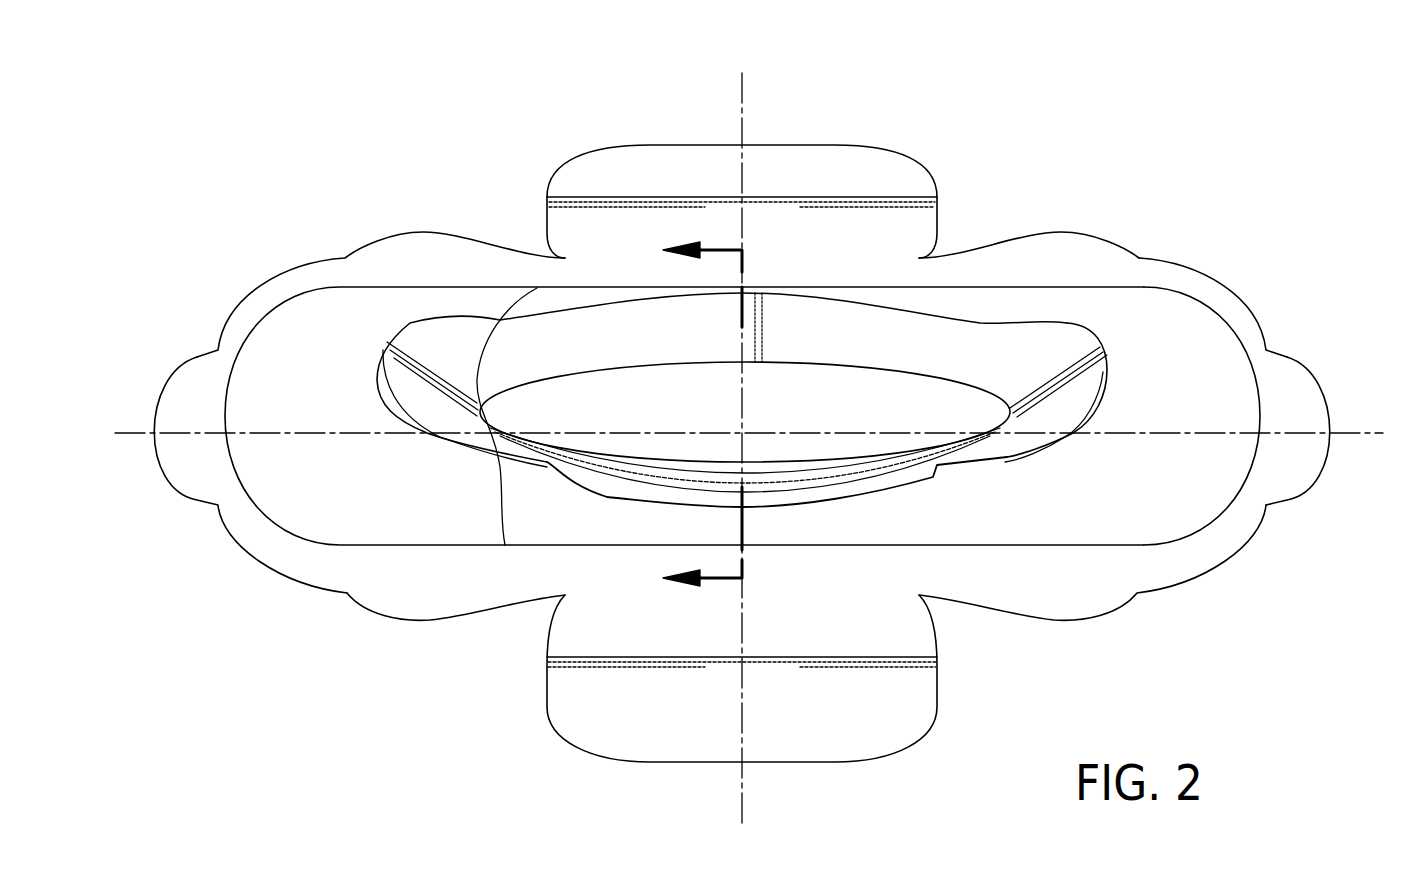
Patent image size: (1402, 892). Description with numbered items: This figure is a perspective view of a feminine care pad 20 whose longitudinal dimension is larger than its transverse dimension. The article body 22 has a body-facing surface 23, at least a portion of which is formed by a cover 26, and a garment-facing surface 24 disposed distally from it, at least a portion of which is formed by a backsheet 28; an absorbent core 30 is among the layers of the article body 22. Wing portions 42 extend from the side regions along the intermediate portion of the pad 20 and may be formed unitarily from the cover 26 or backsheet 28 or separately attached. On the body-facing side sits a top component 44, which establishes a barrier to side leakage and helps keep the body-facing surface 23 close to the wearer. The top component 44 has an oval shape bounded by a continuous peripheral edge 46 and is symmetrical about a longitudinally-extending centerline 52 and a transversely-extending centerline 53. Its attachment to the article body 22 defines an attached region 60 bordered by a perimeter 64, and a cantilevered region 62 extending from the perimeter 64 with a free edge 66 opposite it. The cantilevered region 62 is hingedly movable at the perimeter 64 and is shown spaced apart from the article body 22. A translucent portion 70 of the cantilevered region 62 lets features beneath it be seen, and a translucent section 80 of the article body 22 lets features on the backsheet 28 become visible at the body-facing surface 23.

The feminine care pad 20 is at (749, 439).
The article body 22 is at (1195, 313).
The body-facing surface 23 is at (1201, 479).
The garment-facing surface 24 is at (1222, 600).
The cover 26 is at (1092, 253).
The backsheet 28 is at (1162, 241).
The absorbent core 30 is at (1243, 408).
The wing portions 42 is at (903, 175).
The top component 44 is at (852, 393).
The continuous peripheral edge 46 is at (1007, 457).
The longitudinally-extending centerline 52 is at (1370, 433).
The transversely-extending centerline 53 is at (743, 807).
The attached region 60 is at (719, 426).
The cantilevered region 62 is at (1053, 340).
The perimeter 64 is at (852, 467).
The free edge 66 is at (393, 330).
The translucent portion 70 is at (466, 364).
The translucent section 80 is at (324, 488).